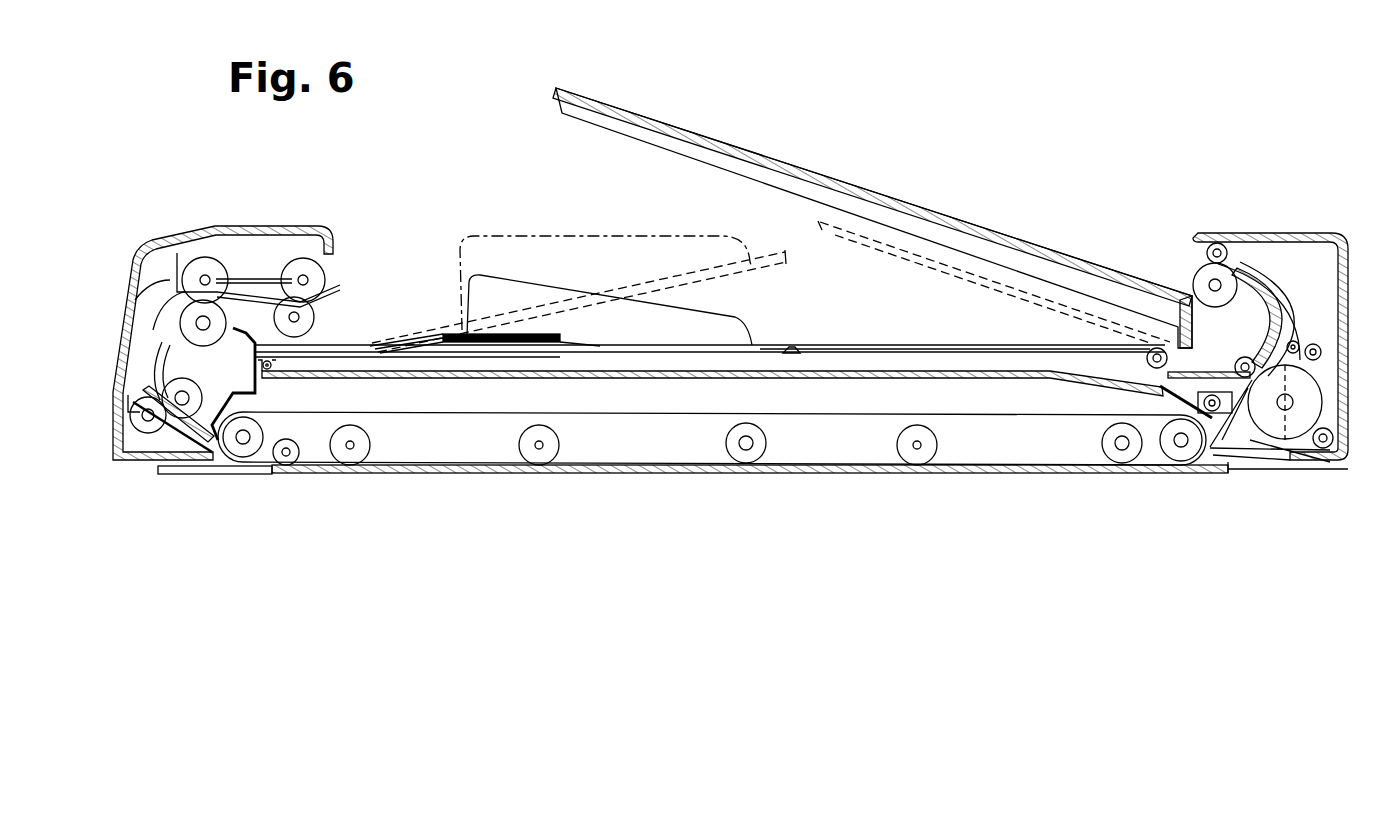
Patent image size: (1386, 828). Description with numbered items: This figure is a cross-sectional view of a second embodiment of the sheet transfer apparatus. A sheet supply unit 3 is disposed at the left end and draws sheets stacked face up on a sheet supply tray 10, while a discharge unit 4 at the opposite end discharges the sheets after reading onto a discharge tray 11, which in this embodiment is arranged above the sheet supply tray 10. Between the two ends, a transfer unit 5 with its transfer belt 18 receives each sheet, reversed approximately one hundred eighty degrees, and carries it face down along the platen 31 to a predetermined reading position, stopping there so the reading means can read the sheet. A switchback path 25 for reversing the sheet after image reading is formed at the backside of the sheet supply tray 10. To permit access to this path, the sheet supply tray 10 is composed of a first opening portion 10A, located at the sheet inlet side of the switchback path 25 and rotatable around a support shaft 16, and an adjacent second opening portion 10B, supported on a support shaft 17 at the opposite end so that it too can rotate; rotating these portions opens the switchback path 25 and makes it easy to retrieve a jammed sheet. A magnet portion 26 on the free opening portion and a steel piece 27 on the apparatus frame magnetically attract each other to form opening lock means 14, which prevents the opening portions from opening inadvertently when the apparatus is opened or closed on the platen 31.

The sheet supply unit 3 is at (245, 228).
The discharge unit 4 is at (1322, 228).
The transfer unit 5 is at (712, 446).
The sheet supply tray 10 is at (490, 330).
The first opening portion 10A is at (945, 348).
The second opening portion 10B is at (768, 345).
The discharge tray 11 is at (718, 140).
The opening lock means 14 is at (890, 532).
The support shaft 16 is at (1160, 358).
The support shaft 17 is at (275, 370).
The transfer belt 18 is at (693, 415).
The switchback path 25 is at (1075, 355).
The magnet portion 26 is at (790, 345).
The steel piece 27 is at (787, 358).
The platen 31 is at (1003, 470).